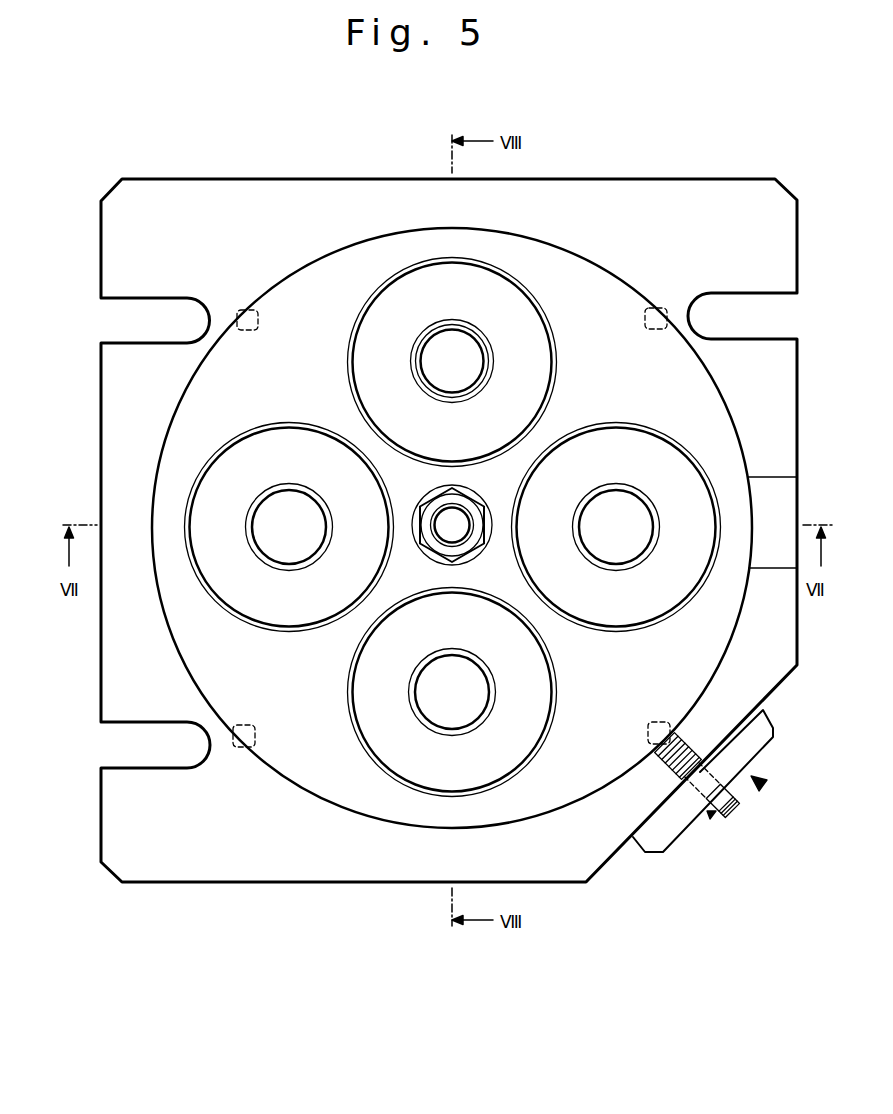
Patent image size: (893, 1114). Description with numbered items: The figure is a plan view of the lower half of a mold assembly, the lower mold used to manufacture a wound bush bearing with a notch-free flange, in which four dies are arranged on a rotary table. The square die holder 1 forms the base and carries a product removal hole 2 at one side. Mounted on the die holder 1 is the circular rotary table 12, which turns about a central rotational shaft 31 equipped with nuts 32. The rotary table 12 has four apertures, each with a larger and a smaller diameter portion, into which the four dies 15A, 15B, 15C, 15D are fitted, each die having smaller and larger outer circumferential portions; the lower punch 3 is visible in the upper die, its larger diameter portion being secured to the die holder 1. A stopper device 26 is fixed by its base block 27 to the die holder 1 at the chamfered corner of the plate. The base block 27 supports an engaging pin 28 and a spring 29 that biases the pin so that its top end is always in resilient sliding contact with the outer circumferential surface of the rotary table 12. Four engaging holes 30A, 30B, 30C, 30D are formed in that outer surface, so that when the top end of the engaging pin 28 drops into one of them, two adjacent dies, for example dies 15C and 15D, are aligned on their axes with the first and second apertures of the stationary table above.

The die holder 1 is at (262, 868).
The product removal hole 2 is at (775, 487).
The lower punch 3 is at (438, 361).
The rotary table 12 is at (368, 805).
The die 15A is at (380, 676).
The die 15B is at (299, 447).
The die 15C is at (440, 300).
The die 15D is at (648, 450).
The stopper device 26 is at (764, 784).
The base block 27 is at (760, 742).
The engaging pin 28 is at (711, 817).
The spring 29 is at (670, 780).
The engaging hole 30A is at (648, 727).
The engaging hole 30B is at (237, 747).
The engaging hole 30C is at (245, 312).
The engaging hole 30D is at (655, 315).
The rotational shaft 31 is at (455, 515).
The nut 32 is at (474, 552).